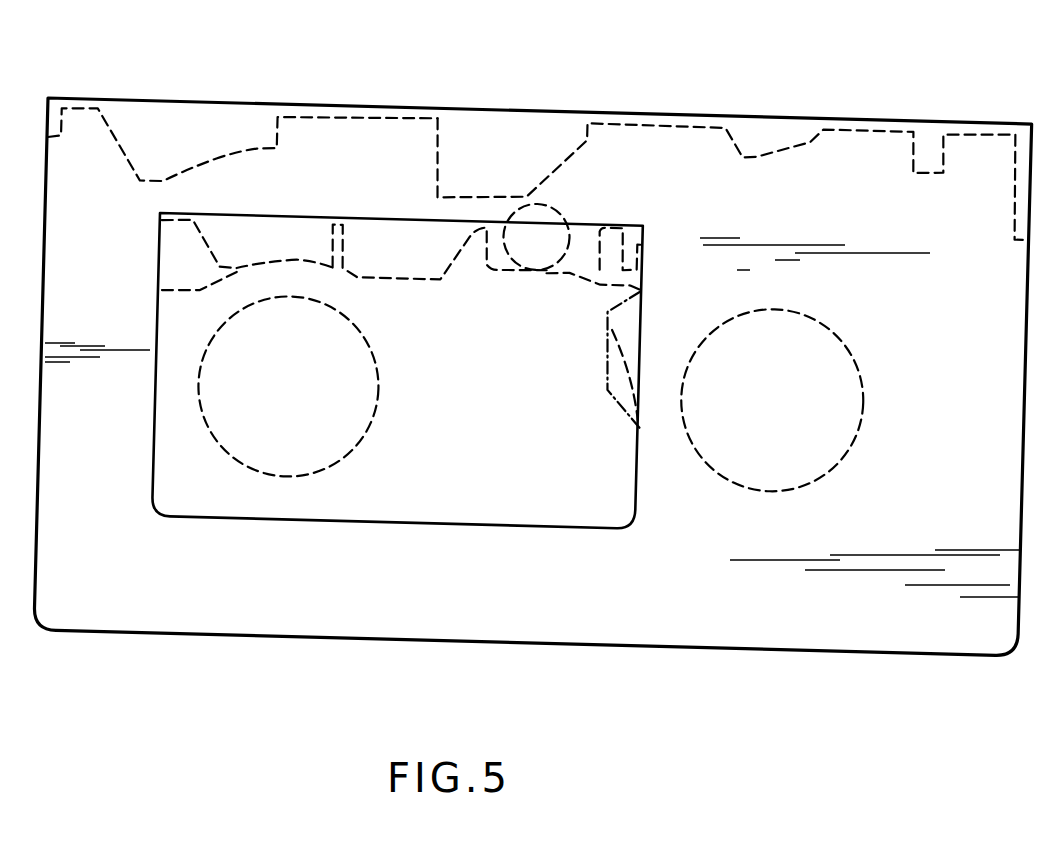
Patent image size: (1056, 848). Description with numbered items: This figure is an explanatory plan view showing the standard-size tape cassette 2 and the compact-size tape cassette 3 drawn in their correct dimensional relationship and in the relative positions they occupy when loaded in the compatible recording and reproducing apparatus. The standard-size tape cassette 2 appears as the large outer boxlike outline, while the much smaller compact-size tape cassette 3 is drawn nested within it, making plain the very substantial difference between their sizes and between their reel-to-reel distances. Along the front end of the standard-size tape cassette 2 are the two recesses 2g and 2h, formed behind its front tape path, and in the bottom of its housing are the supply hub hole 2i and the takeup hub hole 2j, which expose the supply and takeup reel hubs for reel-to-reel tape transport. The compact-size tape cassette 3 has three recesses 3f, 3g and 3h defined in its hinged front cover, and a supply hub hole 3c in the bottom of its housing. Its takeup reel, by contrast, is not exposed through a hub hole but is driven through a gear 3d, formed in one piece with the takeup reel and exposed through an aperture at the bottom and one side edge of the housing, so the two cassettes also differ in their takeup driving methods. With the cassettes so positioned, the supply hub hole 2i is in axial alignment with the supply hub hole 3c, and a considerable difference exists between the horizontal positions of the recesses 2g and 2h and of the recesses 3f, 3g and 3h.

The standard-size tape cassette 2 is at (596, 636).
The recess 2g is at (186, 114).
The recess 2h is at (498, 120).
The supply hub hole 2i is at (330, 387).
The hole 2j is at (849, 327).
The compact-size tape cassette 3 is at (516, 516).
The supply hub hole 3c is at (388, 381).
The gear 3d is at (629, 323).
The recess 3f is at (259, 230).
The recess 3g is at (389, 231).
The recess 3h is at (500, 226).